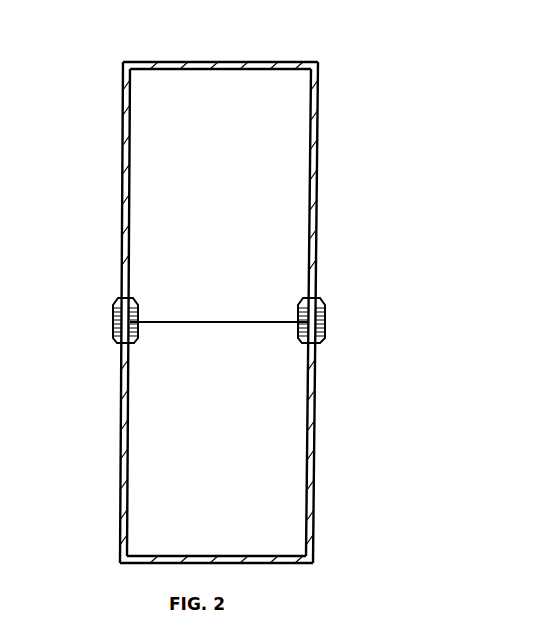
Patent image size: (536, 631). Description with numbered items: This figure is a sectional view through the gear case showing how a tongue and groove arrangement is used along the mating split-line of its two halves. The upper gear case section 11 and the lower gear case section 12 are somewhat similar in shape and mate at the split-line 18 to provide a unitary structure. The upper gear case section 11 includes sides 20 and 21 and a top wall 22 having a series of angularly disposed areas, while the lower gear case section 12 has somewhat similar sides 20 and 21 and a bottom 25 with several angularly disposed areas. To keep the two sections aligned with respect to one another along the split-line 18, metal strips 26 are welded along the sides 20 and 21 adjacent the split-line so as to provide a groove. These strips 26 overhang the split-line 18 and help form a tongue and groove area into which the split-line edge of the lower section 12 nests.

The upper gear case section 11 is at (345, 101).
The lower gear case section 12 is at (345, 476).
The split-line 18 is at (233, 322).
The side 20 is at (122, 122).
The side 21 is at (317, 175).
The top wall 22 is at (220, 61).
The bottom 25 is at (282, 564).
The metal strips 26 is at (113, 313).